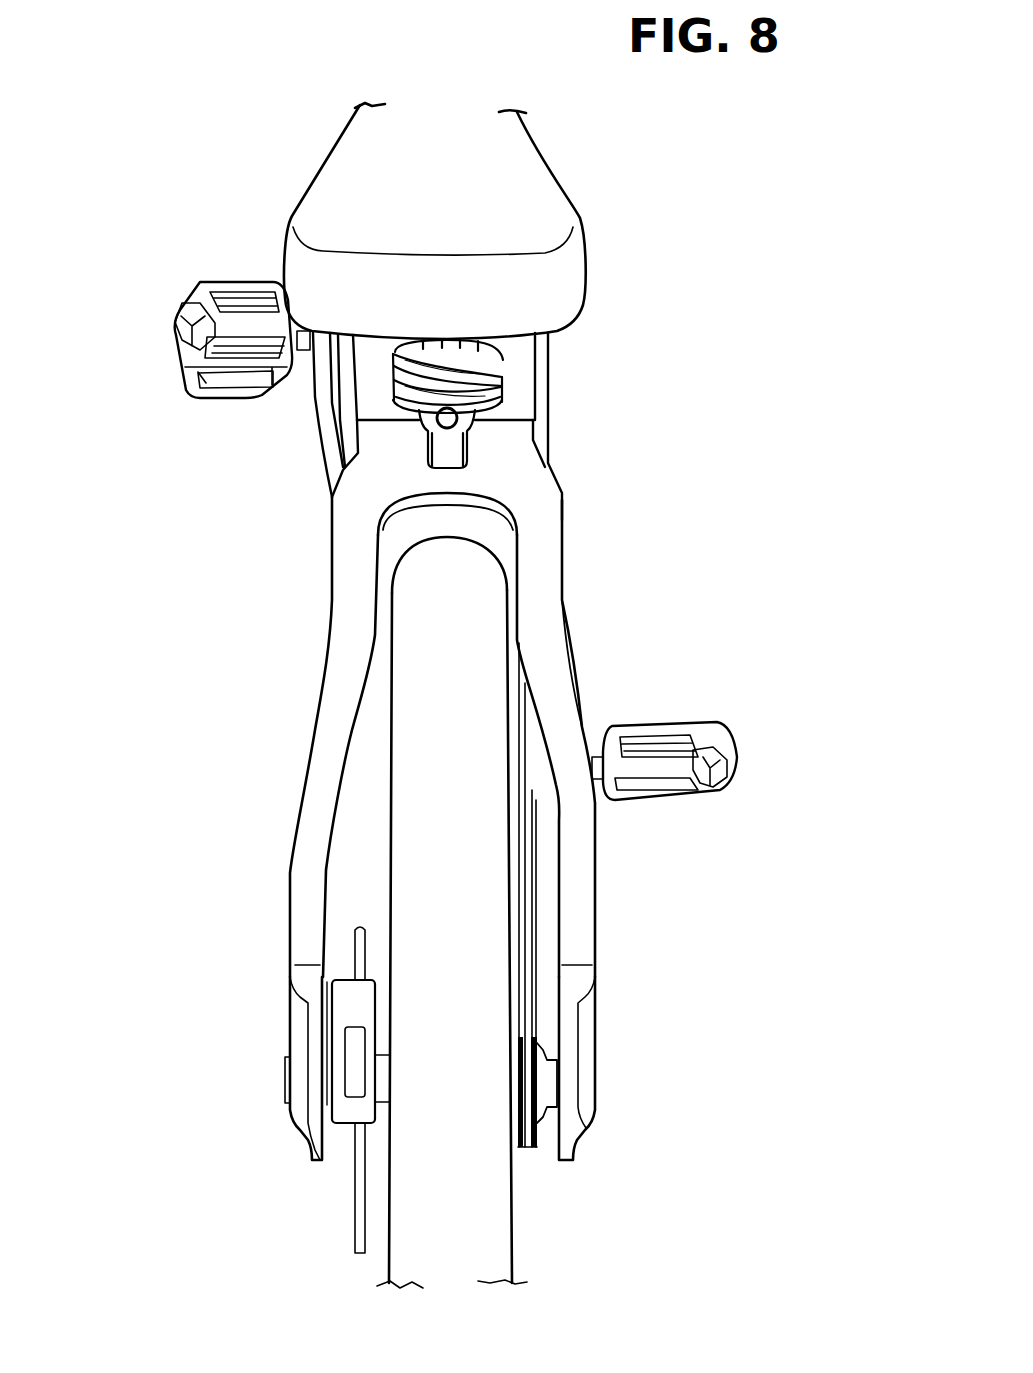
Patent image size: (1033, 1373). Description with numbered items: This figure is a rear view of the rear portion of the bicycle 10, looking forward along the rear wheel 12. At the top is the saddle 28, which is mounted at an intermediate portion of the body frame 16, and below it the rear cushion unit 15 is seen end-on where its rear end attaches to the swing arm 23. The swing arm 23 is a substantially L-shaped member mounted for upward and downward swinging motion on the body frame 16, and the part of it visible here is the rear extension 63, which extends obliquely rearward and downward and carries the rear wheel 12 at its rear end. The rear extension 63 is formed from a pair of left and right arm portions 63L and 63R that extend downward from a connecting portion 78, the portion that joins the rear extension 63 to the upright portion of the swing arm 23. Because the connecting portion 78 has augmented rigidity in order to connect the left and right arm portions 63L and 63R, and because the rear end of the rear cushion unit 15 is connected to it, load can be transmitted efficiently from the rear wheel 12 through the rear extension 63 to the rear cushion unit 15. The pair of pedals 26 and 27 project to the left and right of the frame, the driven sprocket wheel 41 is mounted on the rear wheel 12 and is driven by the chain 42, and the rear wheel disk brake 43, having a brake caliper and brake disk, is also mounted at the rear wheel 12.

The bicycle 10 is at (170, 200).
The rear wheel 12 is at (517, 1247).
The rear cushion unit 15 is at (517, 370).
The body frame 16 is at (560, 395).
The swing arm 23 is at (323, 588).
The pedal 26 is at (172, 336).
The pedal 27 is at (737, 751).
The saddle 28 is at (550, 170).
The driven sprocket wheel 41 is at (540, 1140).
The chain 42 is at (540, 934).
The rear wheel disk brake 43 is at (343, 1130).
The rear extension 63 is at (320, 690).
The left arm portion 63L is at (287, 871).
The right arm portion 63R is at (596, 887).
The connecting portion 78 is at (500, 446).